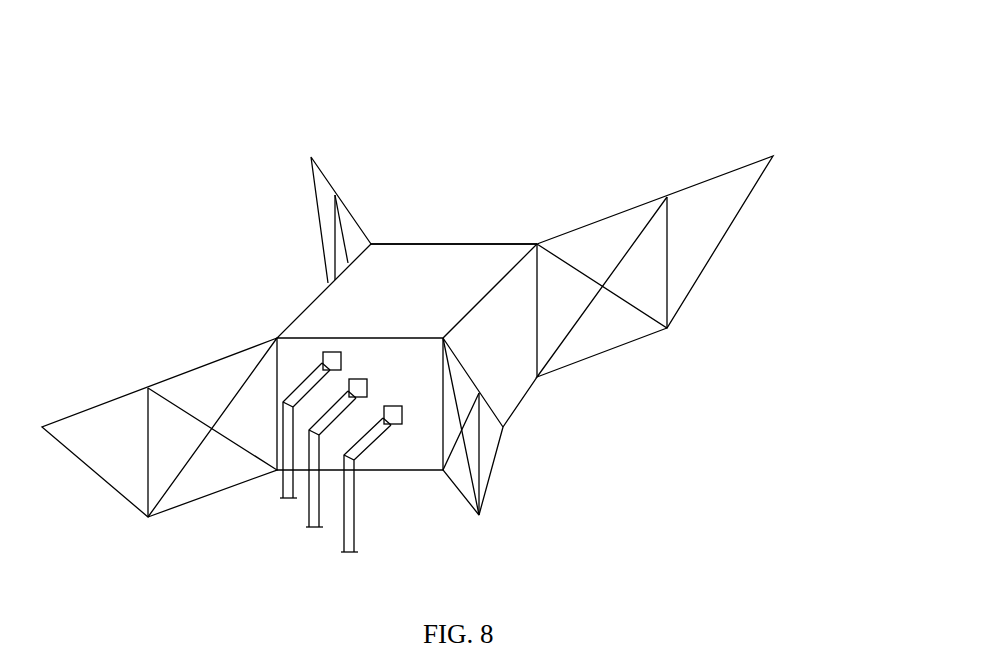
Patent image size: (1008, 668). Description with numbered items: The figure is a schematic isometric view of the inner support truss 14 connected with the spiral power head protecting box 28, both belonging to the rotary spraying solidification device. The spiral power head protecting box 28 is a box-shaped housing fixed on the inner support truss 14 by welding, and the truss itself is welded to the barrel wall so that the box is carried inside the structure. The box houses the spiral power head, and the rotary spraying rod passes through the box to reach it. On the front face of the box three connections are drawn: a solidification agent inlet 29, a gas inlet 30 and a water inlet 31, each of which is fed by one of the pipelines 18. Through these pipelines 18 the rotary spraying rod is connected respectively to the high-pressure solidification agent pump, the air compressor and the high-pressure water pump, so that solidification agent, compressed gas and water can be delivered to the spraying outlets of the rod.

The inner support truss 14 is at (493, 473).
The pipelines 18 is at (343, 537).
The spiral power head protecting box 28 is at (453, 242).
The solidification agent inlet 29 is at (332, 353).
The gas inlet 30 is at (355, 380).
The water inlet 31 is at (402, 423).